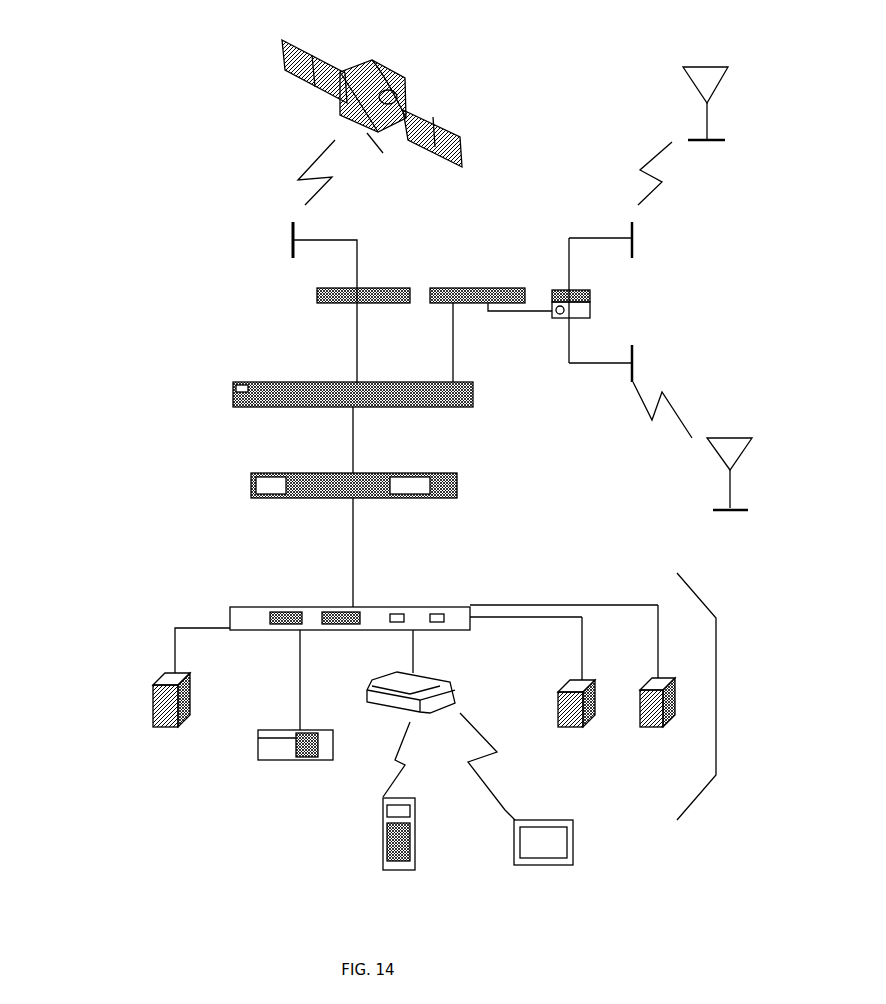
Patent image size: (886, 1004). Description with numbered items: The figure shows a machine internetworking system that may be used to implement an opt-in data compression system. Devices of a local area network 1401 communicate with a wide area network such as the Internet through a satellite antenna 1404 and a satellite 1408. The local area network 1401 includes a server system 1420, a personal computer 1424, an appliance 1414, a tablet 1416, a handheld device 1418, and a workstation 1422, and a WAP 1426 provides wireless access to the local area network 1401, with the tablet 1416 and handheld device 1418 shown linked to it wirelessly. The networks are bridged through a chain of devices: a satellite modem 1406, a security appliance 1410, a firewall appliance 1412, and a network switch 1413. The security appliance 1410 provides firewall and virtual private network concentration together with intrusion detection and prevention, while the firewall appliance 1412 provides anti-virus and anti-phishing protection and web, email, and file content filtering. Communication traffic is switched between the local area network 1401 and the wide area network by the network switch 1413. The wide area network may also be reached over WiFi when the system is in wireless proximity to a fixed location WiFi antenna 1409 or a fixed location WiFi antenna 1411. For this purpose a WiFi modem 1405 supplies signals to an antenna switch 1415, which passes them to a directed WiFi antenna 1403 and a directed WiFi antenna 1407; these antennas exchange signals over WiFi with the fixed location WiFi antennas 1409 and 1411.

The local area network 1401 is at (729, 696).
The directed WiFi antenna 1403 is at (720, 204).
The satellite antenna 1404 is at (235, 302).
The WiFi modem 1405 is at (478, 310).
The satellite modem 1406 is at (265, 295).
The directed WiFi antenna 1407 is at (720, 391).
The satellite 1408 is at (377, 122).
The fixed location WiFi antenna 1409 is at (727, 76).
The security appliance 1410 is at (250, 394).
The fixed location WiFi antenna 1411 is at (658, 474).
The firewall appliance 1412 is at (253, 452).
The network switch 1413 is at (444, 564).
The appliance 1414 is at (302, 712).
The antenna switch 1415 is at (617, 300).
The tablet 1416 is at (546, 807).
The handheld device 1418 is at (430, 813).
The server system 1420 is at (660, 698).
The workstation 1422 is at (565, 694).
The personal computer 1424 is at (180, 707).
The WAP 1426 is at (443, 671).